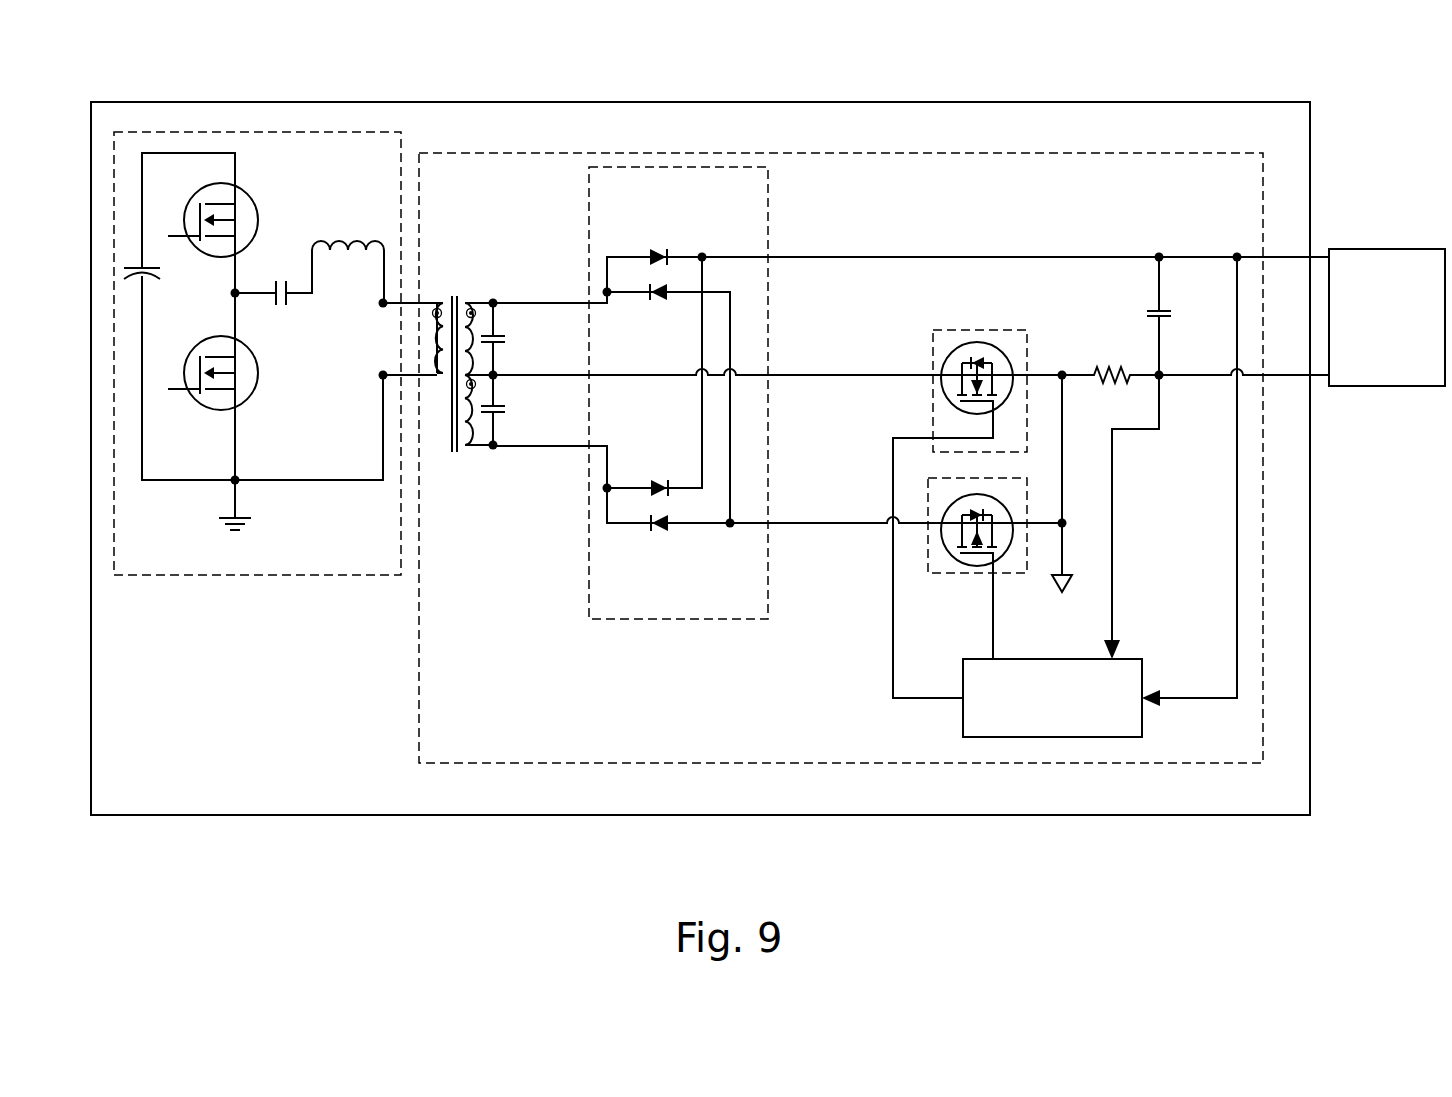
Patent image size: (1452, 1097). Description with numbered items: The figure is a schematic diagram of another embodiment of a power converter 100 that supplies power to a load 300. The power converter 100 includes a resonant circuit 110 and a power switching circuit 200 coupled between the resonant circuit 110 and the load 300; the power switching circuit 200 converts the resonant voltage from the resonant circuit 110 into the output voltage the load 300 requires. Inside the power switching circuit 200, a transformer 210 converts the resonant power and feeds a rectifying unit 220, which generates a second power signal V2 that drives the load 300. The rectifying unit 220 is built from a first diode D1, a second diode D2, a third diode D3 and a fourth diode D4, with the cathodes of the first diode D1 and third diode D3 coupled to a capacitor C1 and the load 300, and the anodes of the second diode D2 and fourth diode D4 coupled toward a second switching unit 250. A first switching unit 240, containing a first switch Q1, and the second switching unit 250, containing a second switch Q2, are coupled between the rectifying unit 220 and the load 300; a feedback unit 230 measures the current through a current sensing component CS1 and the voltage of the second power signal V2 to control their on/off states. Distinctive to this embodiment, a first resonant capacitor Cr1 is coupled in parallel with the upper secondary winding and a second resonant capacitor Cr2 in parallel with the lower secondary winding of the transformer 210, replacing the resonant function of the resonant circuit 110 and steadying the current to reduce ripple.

The power converter 100 is at (1255, 101).
The resonant circuit 110 is at (262, 130).
The power switching circuit 200 is at (1148, 150).
The transformer 210 is at (450, 296).
The rectifying unit 220 is at (911, 333).
The feedback unit 230 is at (1053, 737).
The first switching unit 240 is at (969, 482).
The second switching unit 250 is at (977, 568).
The load 300 is at (1363, 248).
The first diode D1 is at (657, 247).
The second diode D2 is at (655, 303).
The third diode D3 is at (658, 478).
The fourth diode D4 is at (655, 534).
The first resonant capacitor Cr1 is at (507, 340).
The second resonant capacitor Cr2 is at (507, 410).
The first switch Q1 is at (1000, 350).
The second switch Q2 is at (1005, 555).
The current sensing component CS1 is at (1105, 362).
The capacitor C1 is at (1172, 313).
The second power signal V2 is at (1160, 250).